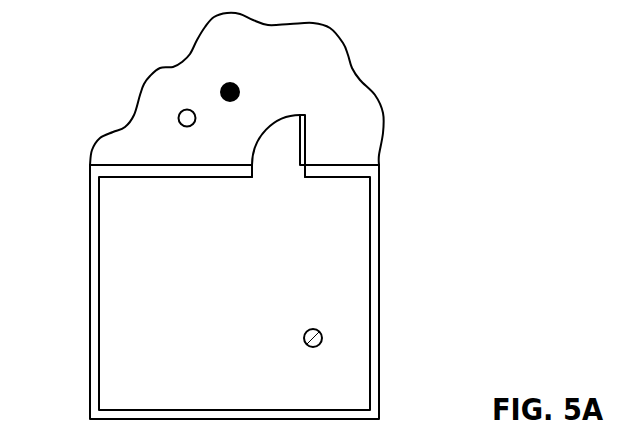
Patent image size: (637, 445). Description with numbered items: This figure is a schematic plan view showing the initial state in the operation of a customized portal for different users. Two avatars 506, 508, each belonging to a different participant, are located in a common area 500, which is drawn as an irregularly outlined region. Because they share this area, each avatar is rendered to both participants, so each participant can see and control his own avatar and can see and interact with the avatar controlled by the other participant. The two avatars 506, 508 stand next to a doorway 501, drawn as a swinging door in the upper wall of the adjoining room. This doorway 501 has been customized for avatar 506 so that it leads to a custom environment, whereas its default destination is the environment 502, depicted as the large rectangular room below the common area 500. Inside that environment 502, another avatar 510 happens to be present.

The common area 500 is at (335, 68).
The doorway 501 is at (306, 142).
The environment 502 is at (127, 290).
The avatar 506 is at (221, 90).
The avatar 508 is at (178, 119).
The avatar 510 is at (322, 338).